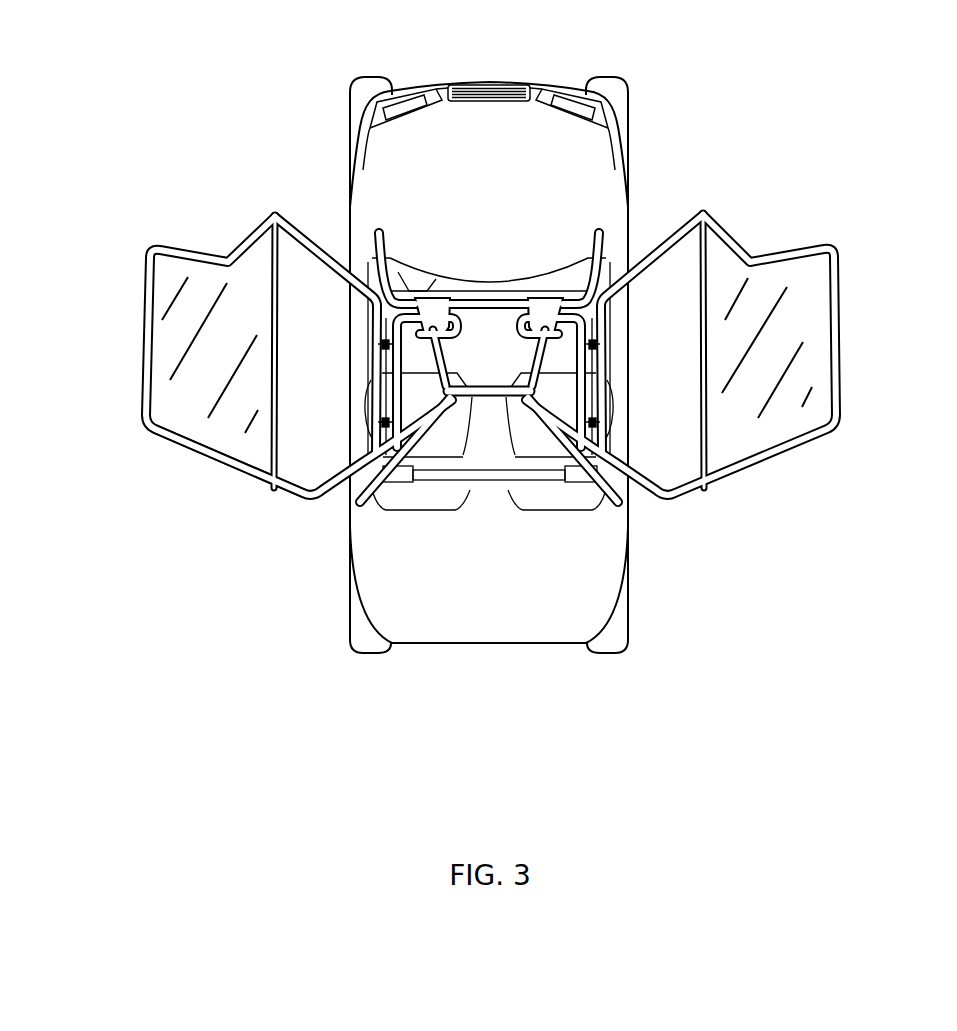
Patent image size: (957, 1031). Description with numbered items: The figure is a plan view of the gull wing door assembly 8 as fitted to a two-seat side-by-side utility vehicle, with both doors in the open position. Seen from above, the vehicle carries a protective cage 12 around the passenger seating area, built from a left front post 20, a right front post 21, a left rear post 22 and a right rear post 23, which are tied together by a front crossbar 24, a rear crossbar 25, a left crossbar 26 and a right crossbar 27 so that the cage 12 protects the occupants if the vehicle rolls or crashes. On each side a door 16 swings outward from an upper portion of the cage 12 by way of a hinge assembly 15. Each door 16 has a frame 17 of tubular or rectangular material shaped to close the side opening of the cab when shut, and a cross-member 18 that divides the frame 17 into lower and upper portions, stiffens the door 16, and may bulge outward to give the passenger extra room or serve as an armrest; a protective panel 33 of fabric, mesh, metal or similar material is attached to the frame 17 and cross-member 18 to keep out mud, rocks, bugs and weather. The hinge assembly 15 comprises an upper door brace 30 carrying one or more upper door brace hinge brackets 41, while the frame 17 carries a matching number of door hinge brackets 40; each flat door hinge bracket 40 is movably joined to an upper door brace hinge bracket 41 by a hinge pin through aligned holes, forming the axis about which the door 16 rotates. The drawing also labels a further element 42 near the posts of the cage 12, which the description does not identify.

The gull wing door assembly 8 is at (249, 354).
The cage 12 is at (388, 516).
The hinge assembly 15 is at (273, 492).
The door 16 is at (102, 298).
The frame 17 is at (300, 236).
The cross-member 18 is at (262, 468).
The left front post 20 is at (606, 247).
The right front post 21 is at (378, 250).
The left rear post 22 is at (619, 495).
The right rear post 23 is at (352, 512).
The front crossbar 24 is at (490, 302).
The rear crossbar 25 is at (493, 483).
The left crossbar 26 is at (590, 344).
The right crossbar 27 is at (335, 425).
The upper door brace 30 is at (410, 378).
The panel 33 is at (227, 361).
The door hinge bracket 40 is at (380, 346).
The upper door brace hinge bracket 41 is at (438, 347).
The seat frame 42 is at (394, 322).